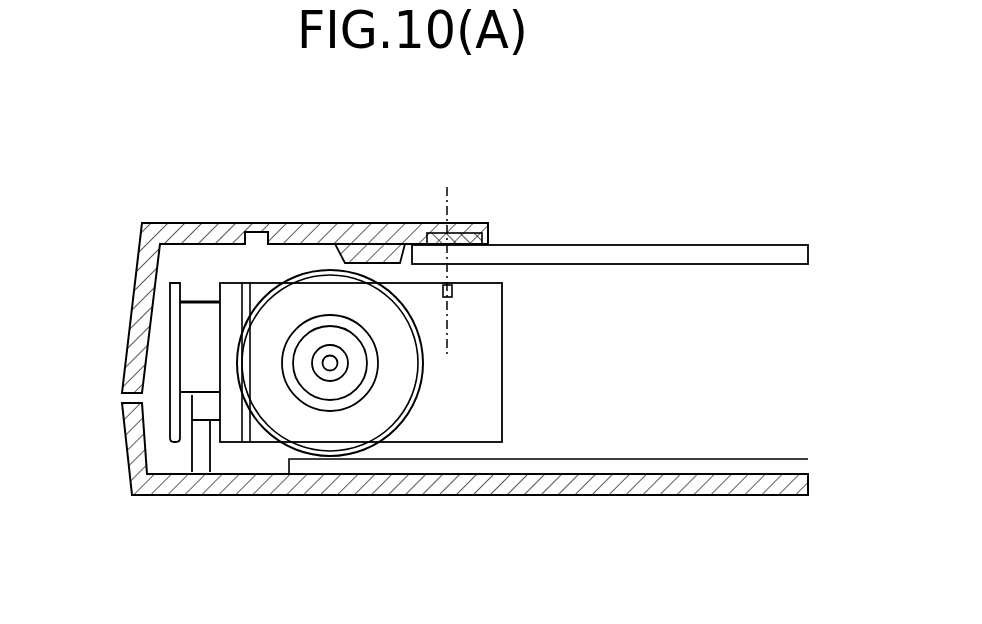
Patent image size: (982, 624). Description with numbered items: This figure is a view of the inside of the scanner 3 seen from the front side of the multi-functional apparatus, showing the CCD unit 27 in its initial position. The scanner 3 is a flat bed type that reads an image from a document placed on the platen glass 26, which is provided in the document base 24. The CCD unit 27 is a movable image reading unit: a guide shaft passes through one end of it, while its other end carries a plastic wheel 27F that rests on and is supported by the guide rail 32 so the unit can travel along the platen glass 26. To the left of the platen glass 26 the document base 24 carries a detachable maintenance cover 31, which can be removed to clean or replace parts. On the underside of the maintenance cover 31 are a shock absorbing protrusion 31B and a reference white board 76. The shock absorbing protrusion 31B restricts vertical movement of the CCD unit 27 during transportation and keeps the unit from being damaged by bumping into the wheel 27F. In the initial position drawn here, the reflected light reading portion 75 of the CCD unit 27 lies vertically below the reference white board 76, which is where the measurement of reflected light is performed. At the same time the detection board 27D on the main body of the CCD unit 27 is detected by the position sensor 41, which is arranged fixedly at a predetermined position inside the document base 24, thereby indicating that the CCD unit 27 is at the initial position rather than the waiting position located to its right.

The scanner 3 is at (425, 357).
The document base 24 is at (382, 330).
The platen glass 26 is at (717, 256).
The CCD unit 27 is at (382, 417).
The detection board 27D is at (210, 403).
The wheel 27F is at (353, 437).
The maintenance cover 31 is at (305, 268).
The shock absorbing protrusion 31B is at (370, 252).
The guide rail 32 is at (583, 468).
The position sensor 41 is at (202, 432).
The reflected light reading portion 75 is at (452, 290).
The reference white board 76 is at (437, 233).